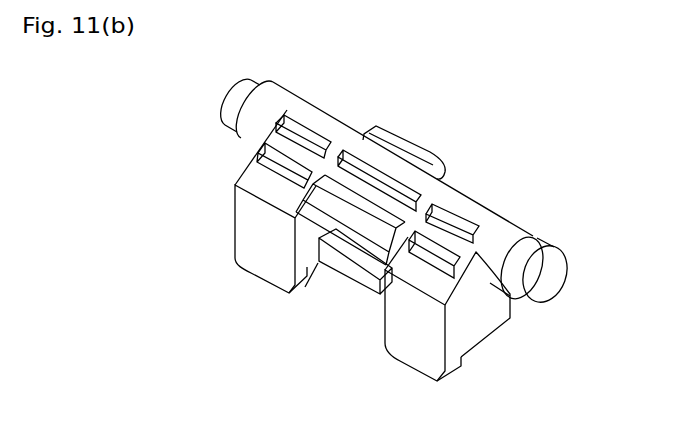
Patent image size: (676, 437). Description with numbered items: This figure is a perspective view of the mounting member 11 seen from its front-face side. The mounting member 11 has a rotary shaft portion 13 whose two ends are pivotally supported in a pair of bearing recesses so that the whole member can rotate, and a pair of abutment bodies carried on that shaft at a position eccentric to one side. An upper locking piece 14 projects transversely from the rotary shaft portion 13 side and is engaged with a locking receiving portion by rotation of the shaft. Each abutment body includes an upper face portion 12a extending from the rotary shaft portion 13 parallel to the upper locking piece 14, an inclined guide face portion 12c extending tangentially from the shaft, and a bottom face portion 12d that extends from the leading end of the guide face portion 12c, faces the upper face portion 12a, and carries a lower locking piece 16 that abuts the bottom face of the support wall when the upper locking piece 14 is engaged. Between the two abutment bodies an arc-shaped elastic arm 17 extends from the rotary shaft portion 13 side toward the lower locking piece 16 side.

The mounting member 11 is at (503, 152).
The upper face portion 12a is at (485, 322).
The guide face portion 12c is at (277, 186).
The bottom face portion 12d is at (252, 231).
The rotary shaft portion 13 is at (236, 108).
The upper locking piece 14 is at (405, 145).
The lower locking piece 16 is at (262, 272).
The elastic arm 17 is at (350, 258).